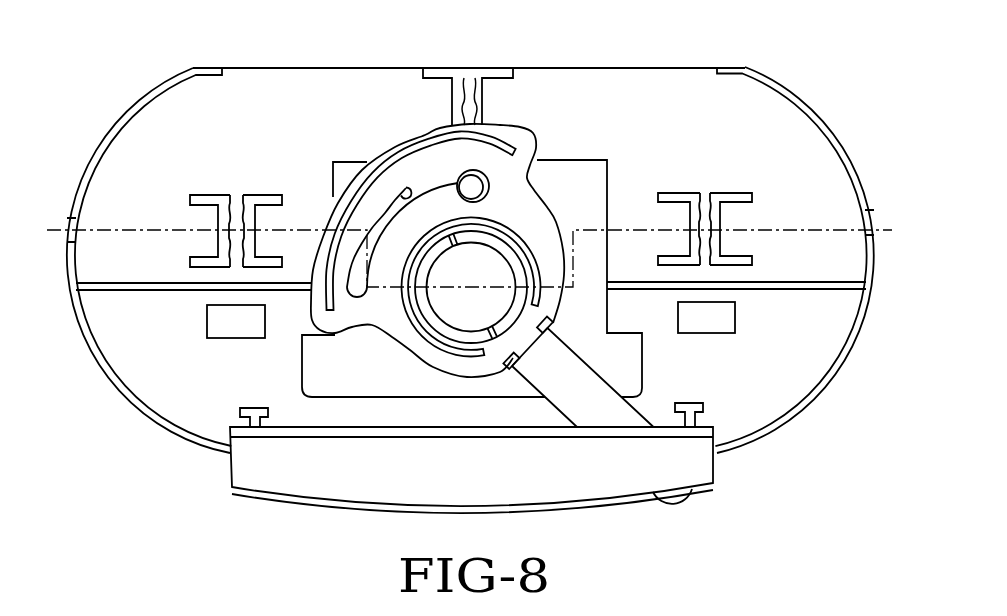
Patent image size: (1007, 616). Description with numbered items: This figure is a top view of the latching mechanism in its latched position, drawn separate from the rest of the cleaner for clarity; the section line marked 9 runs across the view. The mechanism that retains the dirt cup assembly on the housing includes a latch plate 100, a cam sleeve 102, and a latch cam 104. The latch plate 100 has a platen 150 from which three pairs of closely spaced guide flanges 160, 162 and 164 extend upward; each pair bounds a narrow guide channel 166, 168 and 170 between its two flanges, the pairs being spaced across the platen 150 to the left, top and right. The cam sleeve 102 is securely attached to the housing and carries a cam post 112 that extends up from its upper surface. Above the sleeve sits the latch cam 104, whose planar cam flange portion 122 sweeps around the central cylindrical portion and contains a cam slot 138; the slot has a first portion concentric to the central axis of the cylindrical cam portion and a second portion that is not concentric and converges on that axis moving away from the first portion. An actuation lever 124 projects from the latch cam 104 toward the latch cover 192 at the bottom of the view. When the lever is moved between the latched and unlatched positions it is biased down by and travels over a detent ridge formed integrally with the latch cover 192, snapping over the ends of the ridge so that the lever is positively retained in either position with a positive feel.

The latch plate 100 is at (302, 76).
The platen 150 is at (683, 77).
The guide flanges 162 is at (437, 67).
The guide channel 168 is at (463, 68).
The guide flanges 164 is at (218, 195).
The guide channel 170 is at (237, 207).
The guide flanges 160 is at (732, 187).
The guide channel 166 is at (705, 203).
The cam sleeve 102 is at (633, 350).
The latch cam 104 is at (527, 213).
The cam flange portion 122 is at (500, 127).
The cam slot 138 is at (406, 186).
The cam post 112 is at (467, 178).
The actuation lever 124 is at (687, 507).
The latch cover 192 is at (340, 490).
The section line 9- 9 is at (892, 245).